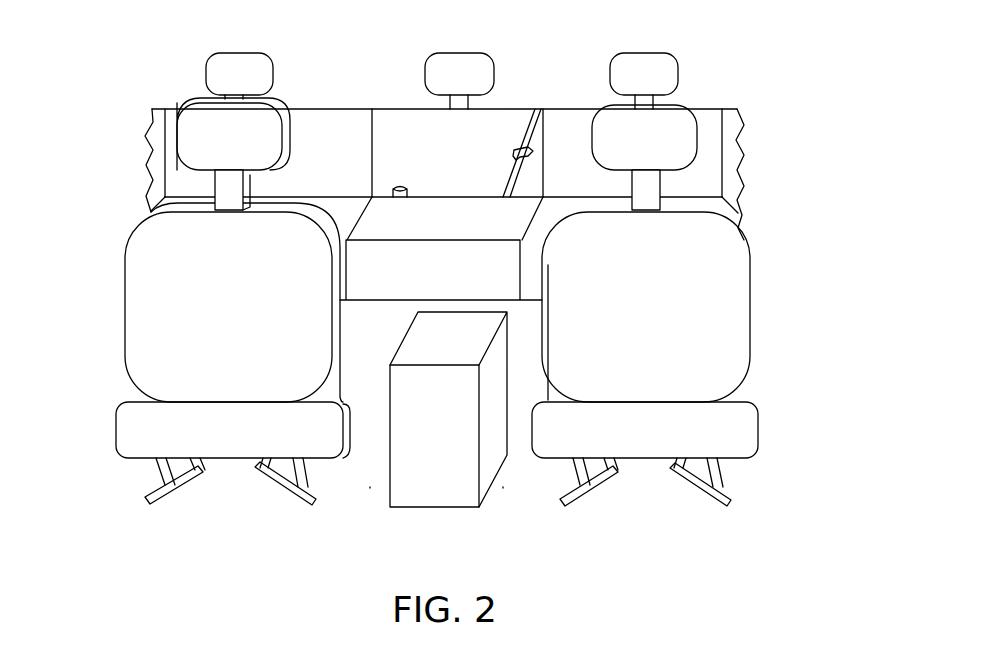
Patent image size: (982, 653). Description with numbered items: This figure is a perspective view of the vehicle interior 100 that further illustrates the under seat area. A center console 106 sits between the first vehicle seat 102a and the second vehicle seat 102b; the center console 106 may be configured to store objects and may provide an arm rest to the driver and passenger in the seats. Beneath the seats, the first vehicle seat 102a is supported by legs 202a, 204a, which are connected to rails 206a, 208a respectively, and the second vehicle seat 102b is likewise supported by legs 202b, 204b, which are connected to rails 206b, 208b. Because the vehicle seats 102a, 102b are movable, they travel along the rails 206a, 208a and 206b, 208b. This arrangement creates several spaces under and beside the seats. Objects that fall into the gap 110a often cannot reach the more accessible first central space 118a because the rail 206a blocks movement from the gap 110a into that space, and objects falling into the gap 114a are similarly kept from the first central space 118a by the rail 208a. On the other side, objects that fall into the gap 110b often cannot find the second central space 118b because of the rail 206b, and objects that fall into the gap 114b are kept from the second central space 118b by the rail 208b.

The vehicle interior 100 is at (765, 103).
The first vehicle seat 102a is at (682, 373).
The second vehicle seat 102b is at (196, 370).
The center console 106 is at (455, 447).
The gap 110a is at (503, 489).
The gap 110b is at (370, 489).
The gap 114a is at (784, 356).
The gap 114b is at (100, 353).
The first central space 118a is at (680, 550).
The second central space 118b is at (194, 550).
The leg 202a is at (568, 479).
The leg 202b is at (307, 483).
The leg 204a is at (725, 476).
The leg 204b is at (150, 476).
The rail 206a is at (601, 494).
The rail 206b is at (277, 492).
The rail 208a is at (702, 500).
The rail 208b is at (169, 502).